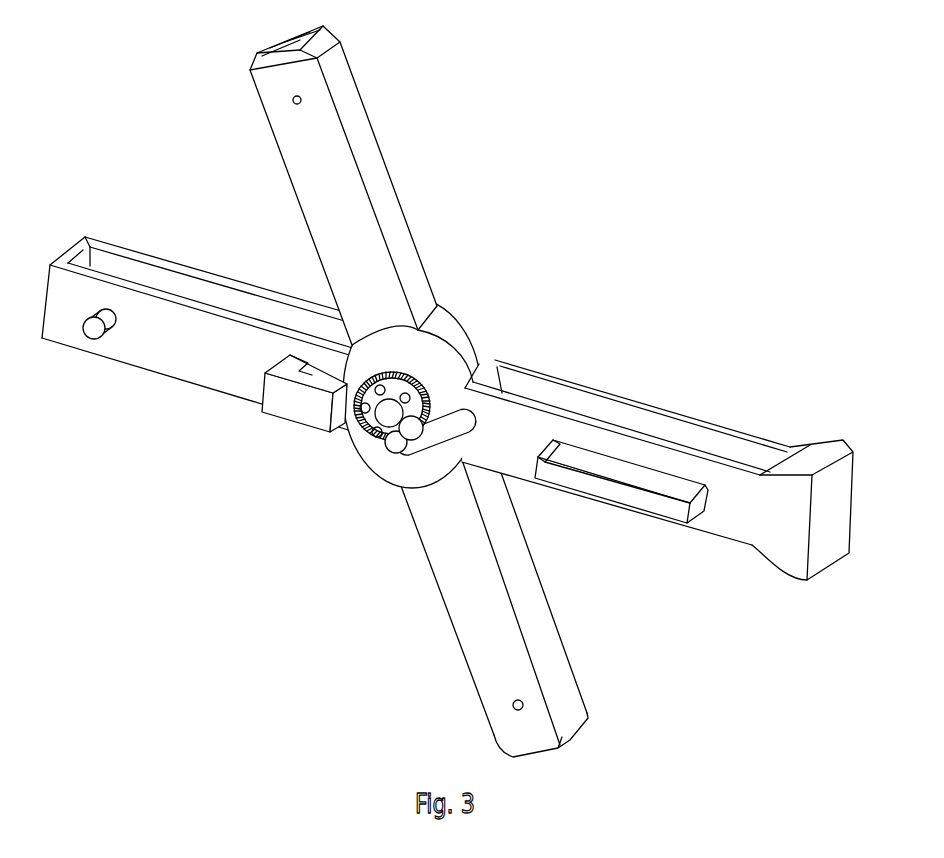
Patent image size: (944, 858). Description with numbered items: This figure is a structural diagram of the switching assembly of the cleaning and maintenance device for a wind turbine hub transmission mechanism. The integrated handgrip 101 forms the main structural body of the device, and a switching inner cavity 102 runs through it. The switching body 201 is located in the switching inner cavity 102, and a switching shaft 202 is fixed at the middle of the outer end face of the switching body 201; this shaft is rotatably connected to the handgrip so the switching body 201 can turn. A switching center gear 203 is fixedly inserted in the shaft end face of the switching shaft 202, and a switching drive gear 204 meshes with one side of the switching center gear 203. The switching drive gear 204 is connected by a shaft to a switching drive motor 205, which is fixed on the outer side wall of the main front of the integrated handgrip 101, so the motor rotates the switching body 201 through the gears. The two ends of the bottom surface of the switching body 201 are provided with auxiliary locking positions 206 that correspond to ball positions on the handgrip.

The integrated handgrip 101 is at (203, 336).
The switching inner cavity 102 is at (657, 441).
The switching body 201 is at (484, 325).
The switching shaft 202 is at (305, 499).
The switching center gear 203 is at (559, 339).
The switching drive gear 204 is at (495, 235).
The switching drive motor 205 is at (231, 436).
The auxiliary locking positions 206 is at (213, 151).